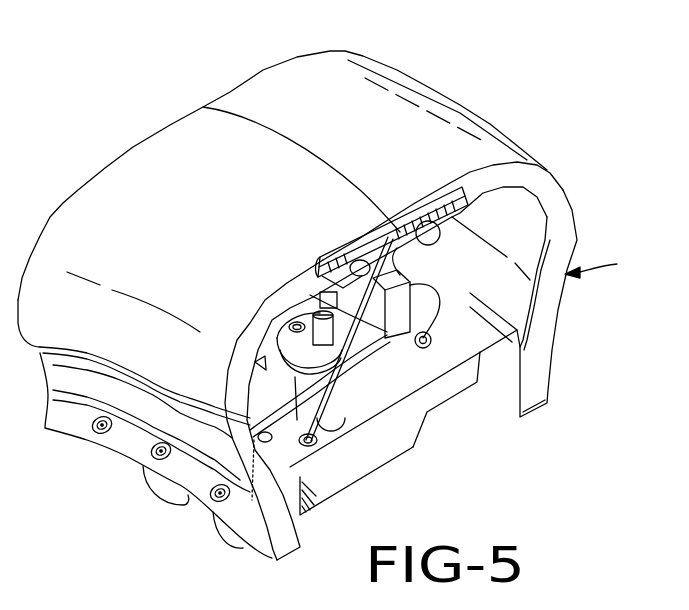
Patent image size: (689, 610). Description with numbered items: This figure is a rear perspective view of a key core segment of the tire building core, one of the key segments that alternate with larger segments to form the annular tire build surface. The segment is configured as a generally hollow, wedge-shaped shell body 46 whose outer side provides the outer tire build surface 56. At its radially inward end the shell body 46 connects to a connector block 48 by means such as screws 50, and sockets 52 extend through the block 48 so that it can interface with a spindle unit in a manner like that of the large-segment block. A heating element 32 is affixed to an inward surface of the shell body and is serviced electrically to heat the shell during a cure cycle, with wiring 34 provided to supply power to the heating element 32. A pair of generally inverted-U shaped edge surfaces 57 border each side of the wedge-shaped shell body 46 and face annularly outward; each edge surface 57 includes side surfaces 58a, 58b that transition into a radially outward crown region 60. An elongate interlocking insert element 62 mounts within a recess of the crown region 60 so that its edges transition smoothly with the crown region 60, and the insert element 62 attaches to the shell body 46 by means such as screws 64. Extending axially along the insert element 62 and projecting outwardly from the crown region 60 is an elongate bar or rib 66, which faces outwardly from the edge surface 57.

The heating element 32 is at (463, 366).
The wiring 34 is at (390, 352).
The shell body 46 is at (423, 320).
The connector block 48 is at (367, 477).
The screws 50 is at (161, 442).
The sockets 52 is at (157, 480).
The outer tire build surface 56 is at (282, 308).
The edge surfaces 57 is at (610, 268).
The side surface 58a is at (546, 187).
The side surface 58b is at (232, 370).
The crown region 60 is at (500, 170).
The interlocking insert element 62 is at (320, 260).
The screws 64 is at (346, 258).
The rib 66 is at (418, 224).